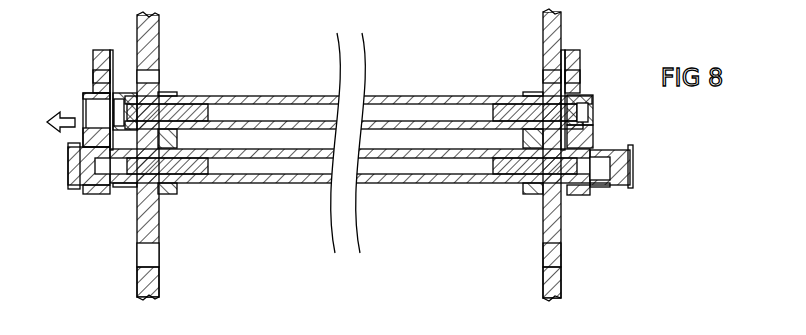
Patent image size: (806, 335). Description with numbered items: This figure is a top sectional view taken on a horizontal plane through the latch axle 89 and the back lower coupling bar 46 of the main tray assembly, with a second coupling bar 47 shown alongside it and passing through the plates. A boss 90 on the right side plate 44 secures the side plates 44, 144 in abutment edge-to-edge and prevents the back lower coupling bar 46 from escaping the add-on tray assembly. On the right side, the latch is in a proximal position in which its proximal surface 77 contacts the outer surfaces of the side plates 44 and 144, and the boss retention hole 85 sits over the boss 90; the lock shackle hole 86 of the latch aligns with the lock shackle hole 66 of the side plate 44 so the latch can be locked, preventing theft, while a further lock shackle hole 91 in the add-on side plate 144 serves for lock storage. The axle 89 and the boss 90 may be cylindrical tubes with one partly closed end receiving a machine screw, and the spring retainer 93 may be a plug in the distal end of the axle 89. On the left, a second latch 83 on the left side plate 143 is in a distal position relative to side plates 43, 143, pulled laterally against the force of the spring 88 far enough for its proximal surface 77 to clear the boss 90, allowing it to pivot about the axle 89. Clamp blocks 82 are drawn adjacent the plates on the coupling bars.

The left side plate 43 is at (148, 43).
The right side plate 44 is at (548, 40).
The back lower coupling bar 46 is at (258, 97).
The second tube 47 is at (258, 183).
The lock shackle hole 66 is at (153, 78).
The proximal surface 77 is at (111, 68).
The clamp block 82 is at (167, 194).
The latch 83 is at (84, 137).
The boss retention hole 85 is at (90, 115).
The lock shackle hole 86 is at (97, 76).
The spring 88 is at (80, 190).
The latch axle 89 is at (125, 180).
The boss 90 is at (127, 100).
The lock shackle hole 91 is at (150, 255).
The spring retainer 93 is at (72, 162).
The left side plate 143 is at (155, 287).
The right side plate 144 is at (552, 287).